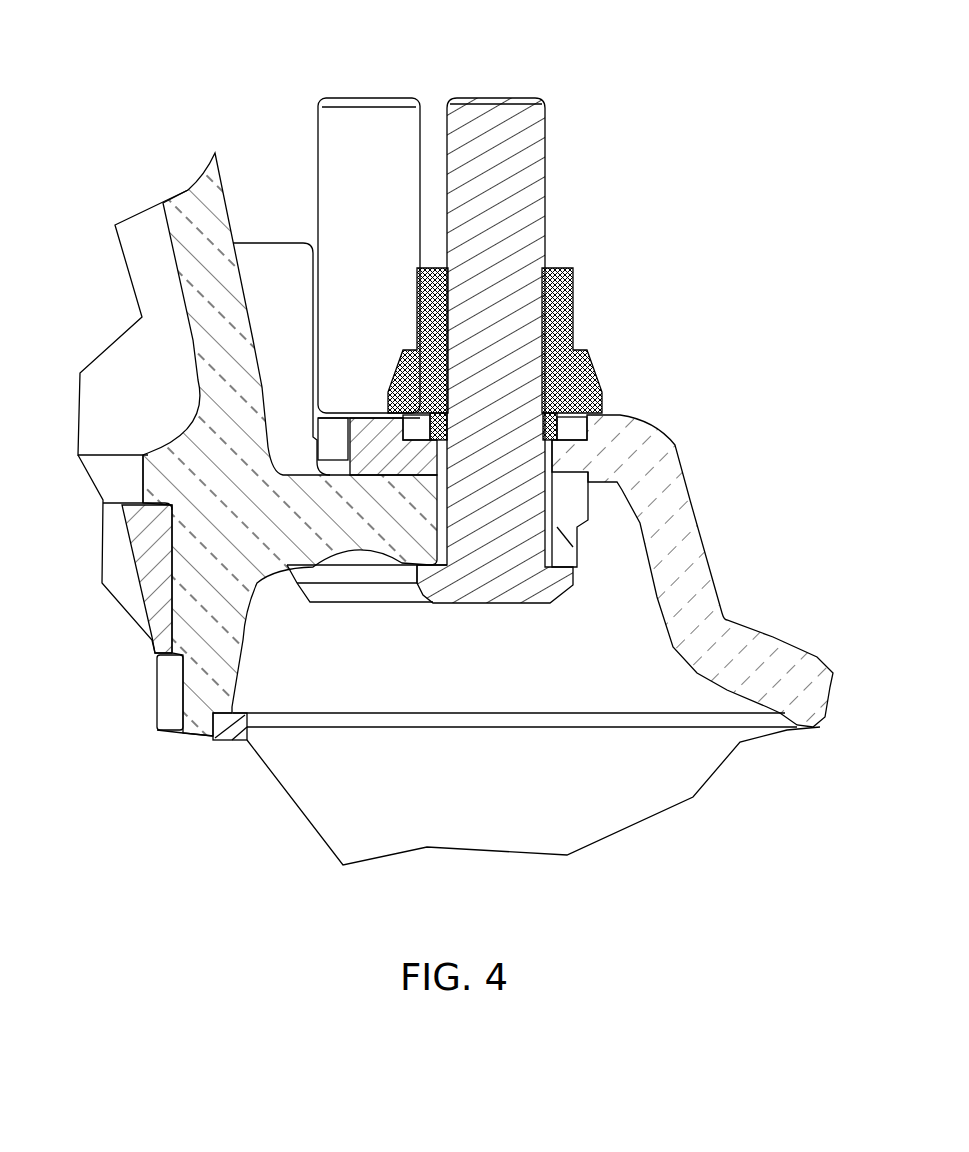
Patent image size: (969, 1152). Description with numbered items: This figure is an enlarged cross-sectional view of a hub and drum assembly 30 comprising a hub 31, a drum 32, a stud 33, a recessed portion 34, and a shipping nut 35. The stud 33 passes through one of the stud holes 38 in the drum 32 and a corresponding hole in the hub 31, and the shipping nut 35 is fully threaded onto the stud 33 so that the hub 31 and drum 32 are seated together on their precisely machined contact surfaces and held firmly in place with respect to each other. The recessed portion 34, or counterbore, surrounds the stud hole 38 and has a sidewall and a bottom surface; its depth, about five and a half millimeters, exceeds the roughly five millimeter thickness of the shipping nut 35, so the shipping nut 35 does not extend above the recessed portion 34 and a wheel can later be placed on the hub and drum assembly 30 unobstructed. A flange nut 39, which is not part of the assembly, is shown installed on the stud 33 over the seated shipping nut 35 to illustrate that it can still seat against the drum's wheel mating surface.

The hub and drum assembly 30 is at (748, 29).
The hub 31 is at (190, 203).
The drum 32 is at (685, 517).
The stud 33 is at (525, 132).
The recessed portion 34 is at (568, 422).
The shipping nut 35 is at (590, 395).
The stud holes 38 is at (557, 460).
The flange nut 39 is at (575, 312).